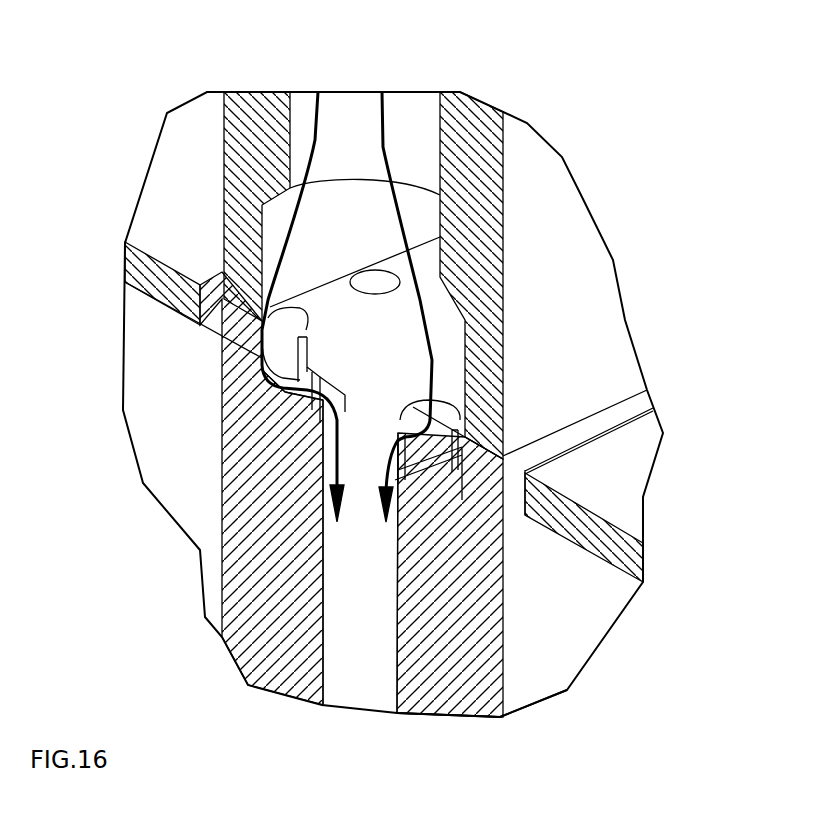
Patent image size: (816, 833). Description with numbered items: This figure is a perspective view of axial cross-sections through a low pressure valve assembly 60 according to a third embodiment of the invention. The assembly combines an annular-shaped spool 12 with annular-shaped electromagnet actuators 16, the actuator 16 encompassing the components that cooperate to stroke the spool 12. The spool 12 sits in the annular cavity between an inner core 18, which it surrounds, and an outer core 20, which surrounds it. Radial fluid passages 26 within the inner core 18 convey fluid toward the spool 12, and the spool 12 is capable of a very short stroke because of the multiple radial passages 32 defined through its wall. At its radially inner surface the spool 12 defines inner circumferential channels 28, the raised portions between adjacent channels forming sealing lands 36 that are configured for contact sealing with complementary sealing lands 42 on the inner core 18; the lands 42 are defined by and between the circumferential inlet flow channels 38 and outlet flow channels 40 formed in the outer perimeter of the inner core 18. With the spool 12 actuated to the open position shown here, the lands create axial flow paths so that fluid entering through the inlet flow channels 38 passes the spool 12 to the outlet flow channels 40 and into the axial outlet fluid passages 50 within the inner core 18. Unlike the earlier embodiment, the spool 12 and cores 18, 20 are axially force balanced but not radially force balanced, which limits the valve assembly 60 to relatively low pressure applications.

The low pressure valve assembly 60 is at (100, 158).
The radial fluid passages 26 is at (394, 122).
The outer core 20 is at (495, 178).
The actuator 16 is at (152, 290).
The spool 12 is at (222, 337).
The radial passages 32 is at (370, 290).
The sealing lands 36 is at (305, 347).
The inlet flow channels 38 is at (265, 368).
The sealing lands 42 is at (312, 402).
The outlet flow channels 40 is at (331, 438).
The inner circumferential channels 28 is at (348, 407).
The axial outlet fluid passages 50 is at (338, 583).
The inner core 18 is at (487, 714).